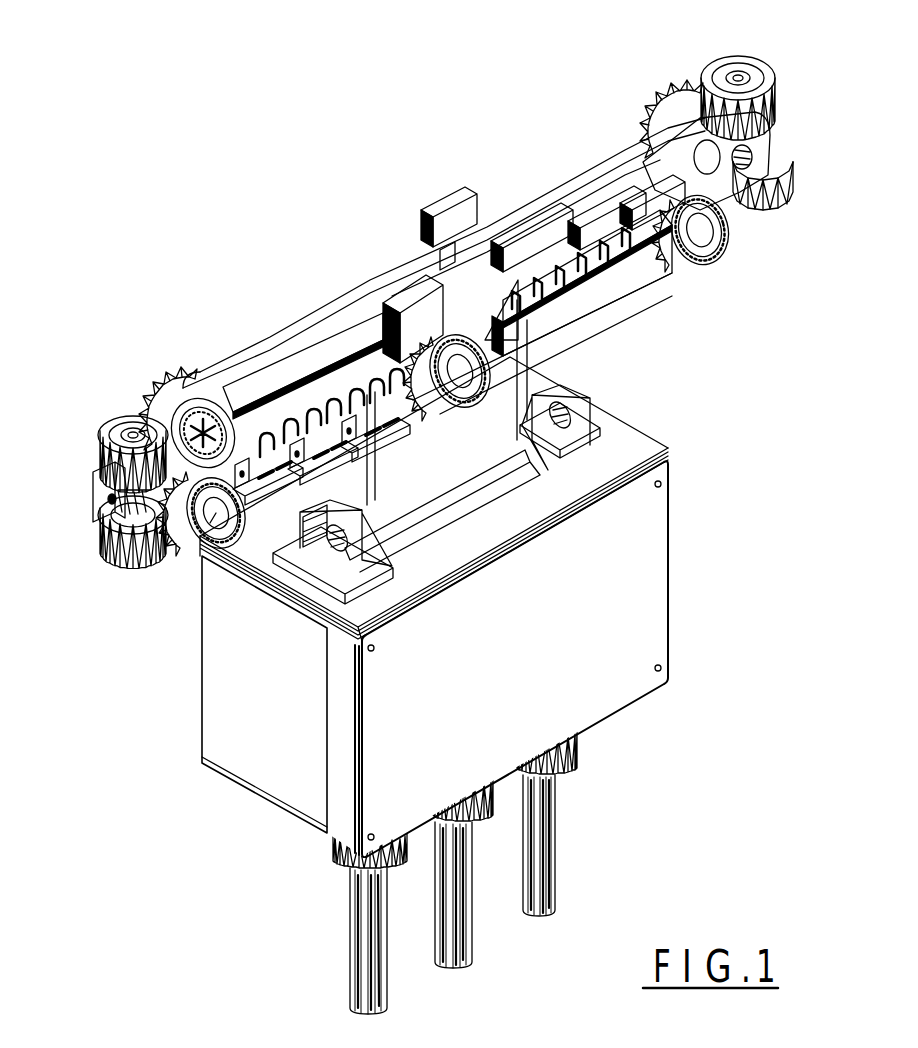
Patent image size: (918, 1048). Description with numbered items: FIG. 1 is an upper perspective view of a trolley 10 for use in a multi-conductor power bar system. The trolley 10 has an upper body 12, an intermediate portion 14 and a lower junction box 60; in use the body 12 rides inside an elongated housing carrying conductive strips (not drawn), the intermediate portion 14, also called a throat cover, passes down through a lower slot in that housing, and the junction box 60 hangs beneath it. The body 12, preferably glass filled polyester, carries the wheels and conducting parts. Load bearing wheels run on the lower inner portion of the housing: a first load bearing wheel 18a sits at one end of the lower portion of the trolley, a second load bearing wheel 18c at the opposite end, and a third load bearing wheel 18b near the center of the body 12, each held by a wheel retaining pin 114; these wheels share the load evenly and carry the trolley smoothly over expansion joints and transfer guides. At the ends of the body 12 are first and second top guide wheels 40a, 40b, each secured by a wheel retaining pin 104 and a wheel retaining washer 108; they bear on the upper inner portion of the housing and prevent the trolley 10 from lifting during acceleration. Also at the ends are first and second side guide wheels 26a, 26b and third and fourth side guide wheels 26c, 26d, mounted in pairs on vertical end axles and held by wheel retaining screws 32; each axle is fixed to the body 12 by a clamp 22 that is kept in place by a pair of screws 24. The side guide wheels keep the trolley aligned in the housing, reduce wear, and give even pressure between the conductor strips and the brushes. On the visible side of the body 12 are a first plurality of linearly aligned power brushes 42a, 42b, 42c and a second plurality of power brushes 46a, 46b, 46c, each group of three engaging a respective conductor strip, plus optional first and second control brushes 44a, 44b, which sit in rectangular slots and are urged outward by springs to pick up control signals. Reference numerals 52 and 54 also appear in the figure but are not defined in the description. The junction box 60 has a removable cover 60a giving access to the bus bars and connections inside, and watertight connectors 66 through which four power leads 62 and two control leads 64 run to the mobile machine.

The trolley 10 is at (186, 814).
The trolley body 12 is at (590, 183).
The intermediate portion 14 is at (412, 494).
The first load bearing wheel 18a is at (203, 565).
The third load bearing wheel 18b is at (455, 398).
The second load bearing wheel 18c is at (700, 265).
The clamp 22 is at (100, 490).
The screws 24 is at (108, 500).
The first side guide wheel 26a is at (100, 432).
The second side guide wheel 26b is at (118, 553).
The third side guide wheel 26c is at (765, 62).
The fourth side guide wheel 26d is at (775, 202).
The wheel retaining screws 32 is at (128, 435).
The first top guide wheel 40a is at (183, 397).
The second top guide wheel 40b is at (700, 115).
The power brush 42a is at (238, 585).
The power brush 42b is at (320, 440).
The power brush 42c is at (377, 420).
The first control brush 44a is at (418, 283).
The second control brush 44b is at (455, 210).
The power brush 46a is at (548, 250).
The power brush 46b is at (605, 232).
The power brush 46c is at (648, 200).
The rack 52 is at (280, 430).
The rack 54 is at (555, 310).
The junction box 60 is at (676, 594).
The removable cover 60a is at (547, 664).
The power leads 62 is at (545, 883).
The control leads 64 is at (462, 935).
The watertight connectors 66 is at (555, 770).
The wheel retaining pin 104 is at (207, 410).
The wheel retaining washer 108 is at (163, 397).
The wheel retaining pin 114 is at (185, 540).